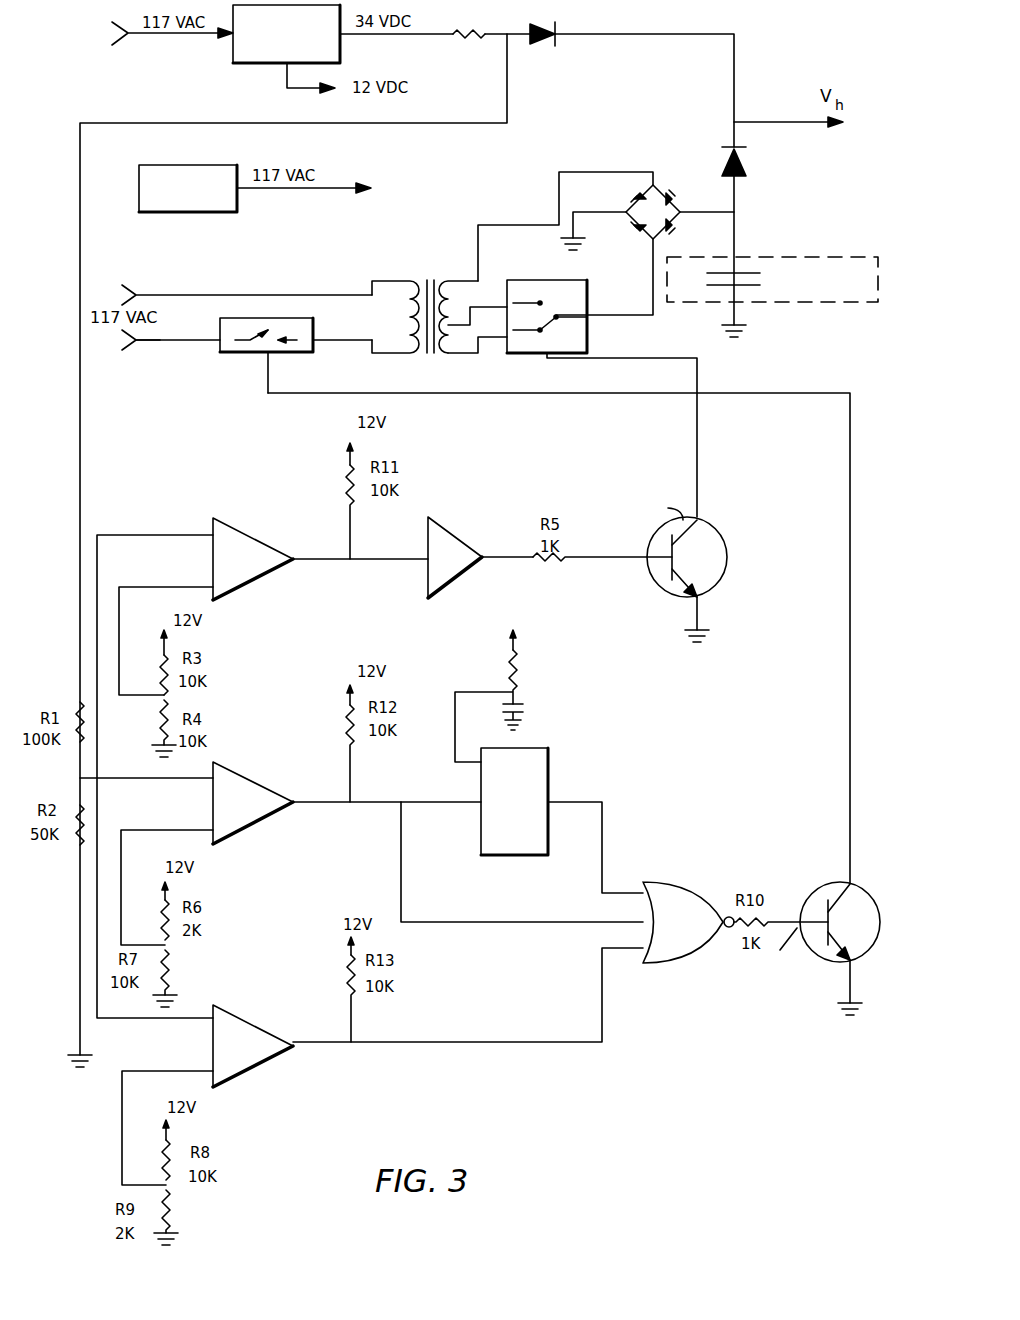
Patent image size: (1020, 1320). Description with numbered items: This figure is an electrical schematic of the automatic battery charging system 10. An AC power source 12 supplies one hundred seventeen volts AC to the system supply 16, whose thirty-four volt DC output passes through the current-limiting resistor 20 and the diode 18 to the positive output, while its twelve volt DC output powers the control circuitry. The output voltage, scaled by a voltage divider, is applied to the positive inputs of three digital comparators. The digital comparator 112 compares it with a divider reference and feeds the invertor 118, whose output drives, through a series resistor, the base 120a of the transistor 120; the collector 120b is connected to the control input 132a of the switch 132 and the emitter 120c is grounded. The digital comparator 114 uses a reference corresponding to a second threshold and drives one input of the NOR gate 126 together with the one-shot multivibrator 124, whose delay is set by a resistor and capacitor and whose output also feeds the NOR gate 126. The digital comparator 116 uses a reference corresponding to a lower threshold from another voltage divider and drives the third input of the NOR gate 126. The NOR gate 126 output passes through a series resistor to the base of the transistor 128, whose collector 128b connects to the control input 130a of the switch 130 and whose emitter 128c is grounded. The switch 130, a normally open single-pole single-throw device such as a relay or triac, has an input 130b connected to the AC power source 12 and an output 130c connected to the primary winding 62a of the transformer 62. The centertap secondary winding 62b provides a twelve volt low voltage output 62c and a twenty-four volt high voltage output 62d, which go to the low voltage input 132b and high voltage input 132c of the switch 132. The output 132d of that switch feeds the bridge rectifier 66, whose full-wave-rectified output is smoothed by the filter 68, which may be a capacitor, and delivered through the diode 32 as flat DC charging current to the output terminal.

The battery charging system 10 is at (555, 1080).
The AC power source 12 is at (190, 213).
The system supply 16 is at (342, 55).
The diode 18 is at (546, 42).
The current-limiting resistor 20 is at (468, 30).
The diode 32 is at (748, 166).
The transformer 62 is at (445, 314).
The primary winding 62a is at (410, 290).
The centertap secondary winding 62b is at (458, 288).
The low voltage output 62c is at (477, 316).
The high voltage output 62d is at (490, 340).
The bridge rectifier 66 is at (660, 193).
The filter 68 is at (745, 253).
The digital comparator 112 is at (243, 590).
The digital comparator 114 is at (243, 834).
The digital comparator 116 is at (243, 1077).
The invertor 118 is at (427, 545).
The transistor 120 is at (679, 570).
The base 120a is at (660, 565).
The collector 120b is at (700, 522).
The emitter 120c is at (700, 618).
The one-shot multivibrator 124 is at (553, 786).
The NOR gate 126 is at (713, 872).
The transistor 128 is at (816, 904).
The collector 128b is at (850, 832).
The emitter 128c is at (850, 991).
The switch 130 is at (254, 347).
The control input 130a is at (268, 378).
The input 130b is at (192, 342).
The output 130c is at (313, 338).
The switch 132 is at (602, 394).
The control input 132a is at (541, 362).
The low voltage input 132b is at (525, 303).
The high voltage input 132c is at (520, 333).
The output 132d is at (590, 312).